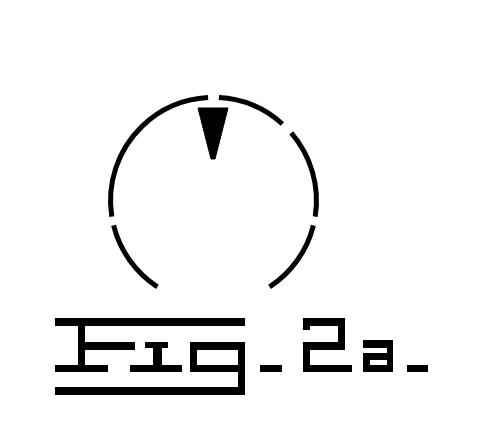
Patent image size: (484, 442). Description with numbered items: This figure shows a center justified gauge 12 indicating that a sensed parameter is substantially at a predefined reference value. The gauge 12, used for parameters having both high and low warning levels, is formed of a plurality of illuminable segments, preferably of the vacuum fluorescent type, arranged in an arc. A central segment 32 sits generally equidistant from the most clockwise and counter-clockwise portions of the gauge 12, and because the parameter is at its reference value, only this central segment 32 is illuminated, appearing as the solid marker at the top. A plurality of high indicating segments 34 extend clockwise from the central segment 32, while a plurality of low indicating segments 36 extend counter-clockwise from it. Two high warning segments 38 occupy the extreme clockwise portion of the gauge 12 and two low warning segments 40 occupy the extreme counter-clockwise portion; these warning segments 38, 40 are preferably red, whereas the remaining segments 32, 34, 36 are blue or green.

The gauge 12 is at (213, 173).
The central segment 32 is at (213, 82).
The high indicating segments 34 is at (313, 158).
The low indicating segments 36 is at (115, 160).
The high warning segments 38 is at (302, 262).
The low warning segments 40 is at (113, 252).